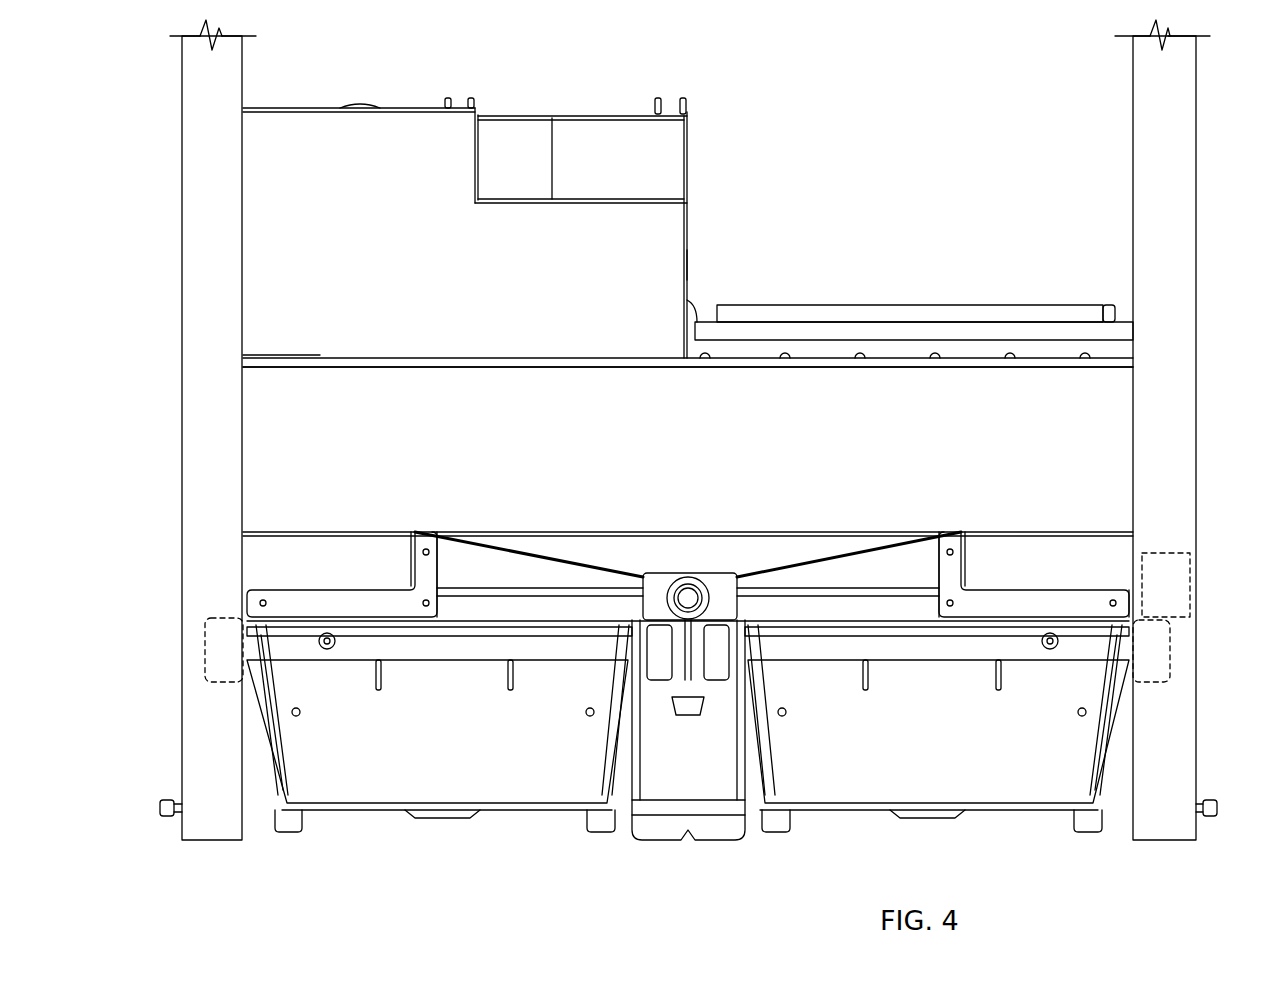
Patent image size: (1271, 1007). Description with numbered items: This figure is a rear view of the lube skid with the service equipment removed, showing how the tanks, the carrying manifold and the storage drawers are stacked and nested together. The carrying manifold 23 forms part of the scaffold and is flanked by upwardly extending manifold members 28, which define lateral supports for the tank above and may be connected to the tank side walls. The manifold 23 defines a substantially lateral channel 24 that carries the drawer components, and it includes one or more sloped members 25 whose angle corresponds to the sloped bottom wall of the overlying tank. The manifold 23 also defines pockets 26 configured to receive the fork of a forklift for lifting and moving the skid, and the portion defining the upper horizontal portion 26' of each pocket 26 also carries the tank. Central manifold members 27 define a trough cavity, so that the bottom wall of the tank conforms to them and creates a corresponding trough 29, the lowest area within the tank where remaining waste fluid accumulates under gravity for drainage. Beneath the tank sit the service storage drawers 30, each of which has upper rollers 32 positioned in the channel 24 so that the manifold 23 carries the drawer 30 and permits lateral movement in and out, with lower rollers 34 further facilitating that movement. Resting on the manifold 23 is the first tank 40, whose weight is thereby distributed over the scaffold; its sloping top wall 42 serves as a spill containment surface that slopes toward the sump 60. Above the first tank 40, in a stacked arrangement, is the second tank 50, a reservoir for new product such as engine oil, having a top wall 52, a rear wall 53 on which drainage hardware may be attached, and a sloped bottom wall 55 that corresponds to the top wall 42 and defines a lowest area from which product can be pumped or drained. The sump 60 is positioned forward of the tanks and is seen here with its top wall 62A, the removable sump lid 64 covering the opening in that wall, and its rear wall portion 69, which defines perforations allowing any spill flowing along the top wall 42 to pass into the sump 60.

The carrying manifold 23 is at (1108, 588).
The lateral channel 24 is at (205, 648).
The sloped member 25 is at (560, 547).
The pocket 26 is at (688, 541).
The upper horizontal portion of pocket 26' is at (1097, 531).
The manifold member 27 is at (730, 600).
The upwardly extending manifold member 28 is at (240, 411).
The trough 29 is at (738, 600).
The service storage drawer 30 is at (464, 769).
The upper roller 32 is at (667, 676).
The lower roller 34 is at (292, 828).
The first tank 40 is at (1017, 420).
The sloping top wall 42 is at (913, 368).
The second tank 50 is at (516, 297).
The top wall 52 is at (416, 114).
The rear wall 53 is at (672, 262).
The bottom wall 55 is at (280, 356).
The sump 60 is at (897, 330).
The top wall 62A is at (1120, 318).
The sump lid 64 is at (972, 313).
The rear wall portion 69 is at (1126, 355).